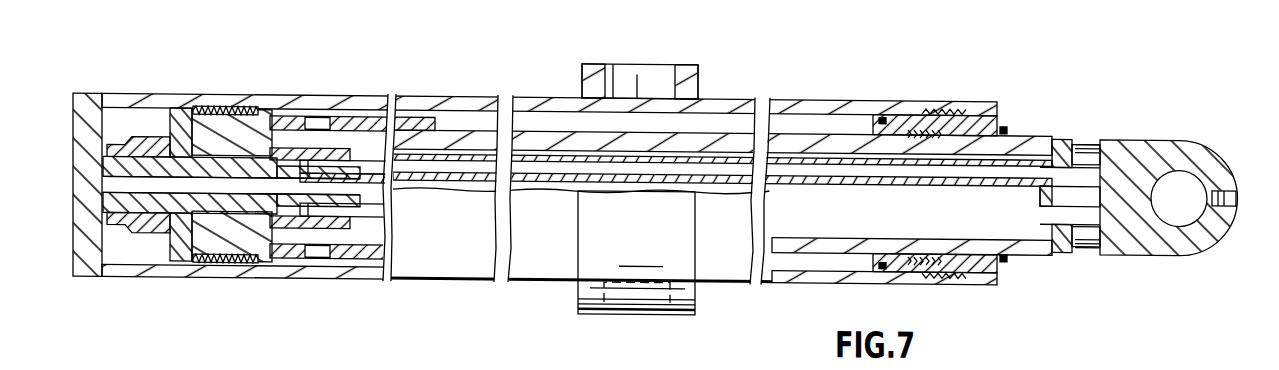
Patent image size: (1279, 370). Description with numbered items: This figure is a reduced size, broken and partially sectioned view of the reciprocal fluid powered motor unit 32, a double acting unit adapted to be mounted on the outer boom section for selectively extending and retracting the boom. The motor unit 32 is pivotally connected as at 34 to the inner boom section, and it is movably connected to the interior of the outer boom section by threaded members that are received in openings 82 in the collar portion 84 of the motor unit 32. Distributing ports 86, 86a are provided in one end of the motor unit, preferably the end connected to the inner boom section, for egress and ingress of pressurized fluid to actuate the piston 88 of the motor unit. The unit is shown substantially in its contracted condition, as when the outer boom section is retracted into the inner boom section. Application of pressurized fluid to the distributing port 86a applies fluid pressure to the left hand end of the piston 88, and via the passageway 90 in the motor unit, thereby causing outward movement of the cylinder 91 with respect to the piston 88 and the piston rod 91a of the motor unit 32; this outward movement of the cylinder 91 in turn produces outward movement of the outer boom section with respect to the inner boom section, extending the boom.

The reciprocal fluid powered motor unit 32 is at (866, 94).
The pivotal connection 34 is at (1188, 180).
The openings 82 is at (648, 78).
The collar portion 84 is at (596, 305).
The distributing port 86 is at (1090, 138).
The distributing port 86a is at (1087, 249).
The piston 88 is at (262, 113).
The passageway 90 is at (252, 184).
The cylinder 91 is at (457, 99).
The piston rod 91a is at (1046, 136).